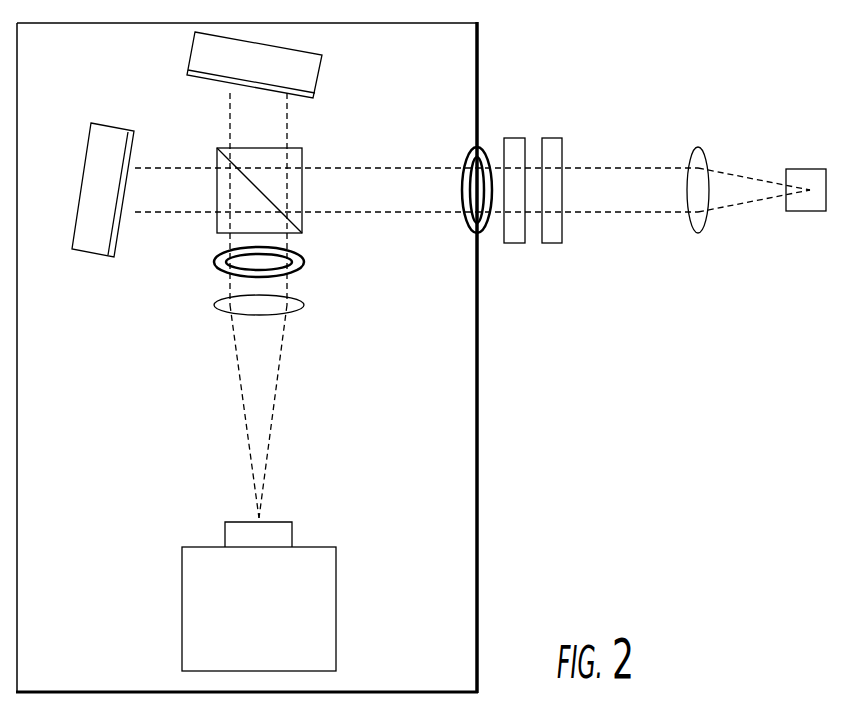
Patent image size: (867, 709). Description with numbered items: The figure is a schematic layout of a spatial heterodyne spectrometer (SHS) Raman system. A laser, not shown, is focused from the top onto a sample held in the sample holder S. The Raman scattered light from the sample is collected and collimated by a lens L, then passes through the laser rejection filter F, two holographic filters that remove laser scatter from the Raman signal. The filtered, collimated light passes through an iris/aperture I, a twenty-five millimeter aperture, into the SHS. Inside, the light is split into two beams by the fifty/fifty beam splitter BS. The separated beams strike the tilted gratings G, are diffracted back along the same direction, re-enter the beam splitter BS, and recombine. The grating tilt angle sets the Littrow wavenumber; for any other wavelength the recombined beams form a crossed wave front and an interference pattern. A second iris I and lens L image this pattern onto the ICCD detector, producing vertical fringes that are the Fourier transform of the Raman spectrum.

The grating G is at (187, 144).
The beam splitter BS is at (233, 175).
The iris/aperture I is at (342, 192).
The lens L is at (461, 236).
The laser rejection filter F is at (533, 212).
The sample holder S is at (806, 210).
The intensified charge-coupled device ICCD is at (209, 596).